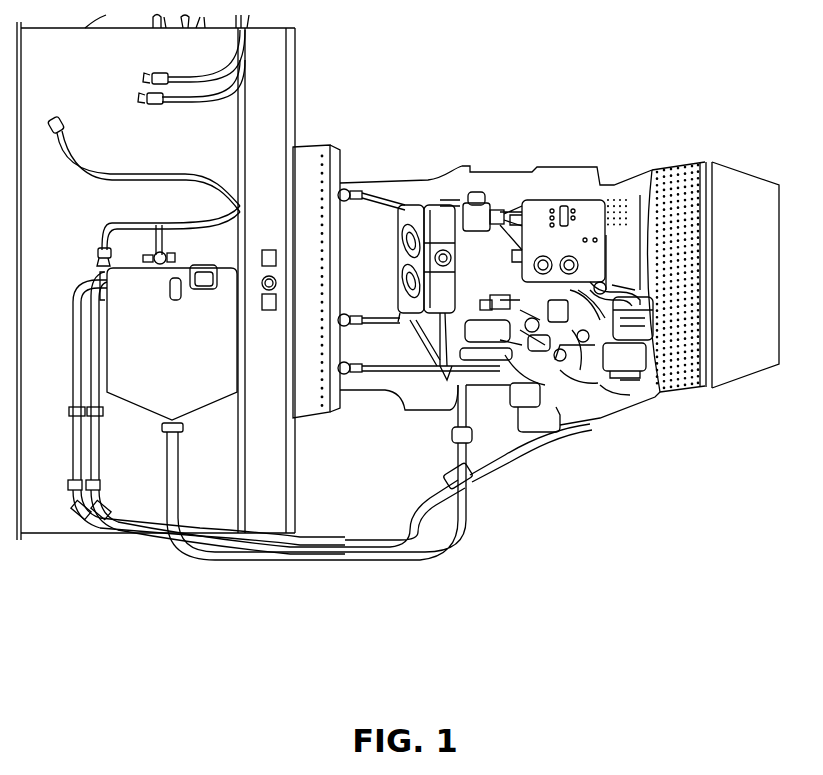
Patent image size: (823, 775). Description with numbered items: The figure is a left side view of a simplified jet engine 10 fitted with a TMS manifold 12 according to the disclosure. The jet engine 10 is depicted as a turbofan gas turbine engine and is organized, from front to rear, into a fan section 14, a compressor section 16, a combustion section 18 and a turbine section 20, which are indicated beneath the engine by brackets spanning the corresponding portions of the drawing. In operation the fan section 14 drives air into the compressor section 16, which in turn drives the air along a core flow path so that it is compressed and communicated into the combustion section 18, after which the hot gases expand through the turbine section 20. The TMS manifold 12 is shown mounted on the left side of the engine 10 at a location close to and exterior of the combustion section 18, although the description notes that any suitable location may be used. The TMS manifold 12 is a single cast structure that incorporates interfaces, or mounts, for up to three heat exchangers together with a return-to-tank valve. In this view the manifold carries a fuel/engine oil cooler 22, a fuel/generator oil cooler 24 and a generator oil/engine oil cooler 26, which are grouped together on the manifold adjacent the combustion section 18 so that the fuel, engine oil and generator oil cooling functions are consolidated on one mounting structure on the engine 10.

The jet engine 10 is at (437, 128).
The TMS manifold 12 is at (590, 362).
The fan section 14 is at (306, 615).
The compressor section 16 is at (312, 615).
The combustion section 18 is at (605, 615).
The turbine section 20 is at (611, 615).
The fuel/engine oil cooler (ENG FOC) 22 is at (625, 353).
The fuel/generator oil cooler (IDG FOC) 24 is at (617, 195).
The generator oil/engine oil cooler (IDG OOC) 26 is at (572, 330).